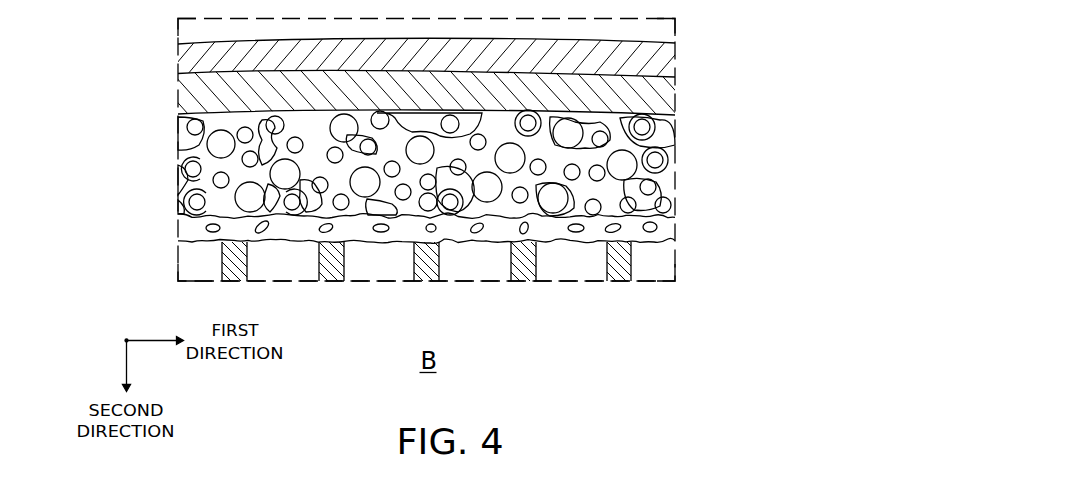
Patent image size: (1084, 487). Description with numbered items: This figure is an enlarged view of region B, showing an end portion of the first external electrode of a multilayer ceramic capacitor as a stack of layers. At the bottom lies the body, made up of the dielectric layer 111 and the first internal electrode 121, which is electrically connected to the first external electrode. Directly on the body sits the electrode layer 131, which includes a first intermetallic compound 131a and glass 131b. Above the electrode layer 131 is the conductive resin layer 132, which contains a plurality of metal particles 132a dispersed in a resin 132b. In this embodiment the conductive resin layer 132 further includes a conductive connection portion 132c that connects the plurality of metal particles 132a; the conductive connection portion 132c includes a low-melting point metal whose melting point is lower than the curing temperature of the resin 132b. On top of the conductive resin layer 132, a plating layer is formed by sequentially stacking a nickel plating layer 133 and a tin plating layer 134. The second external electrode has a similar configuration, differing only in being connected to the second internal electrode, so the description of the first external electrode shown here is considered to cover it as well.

The dielectric layer 111 is at (568, 266).
The first internal electrode 121 is at (626, 283).
The electrode layer 131 is at (498, 243).
The first intermetallic compound 131a is at (658, 234).
The glass 131b is at (657, 248).
The conductive resin layer 132 is at (498, 164).
The metal particles 132a is at (658, 132).
The resin 132b is at (662, 189).
The conductive connection portion 132c is at (612, 159).
The nickel plating layer 133 is at (674, 100).
The tin plating layer 134 is at (674, 64).